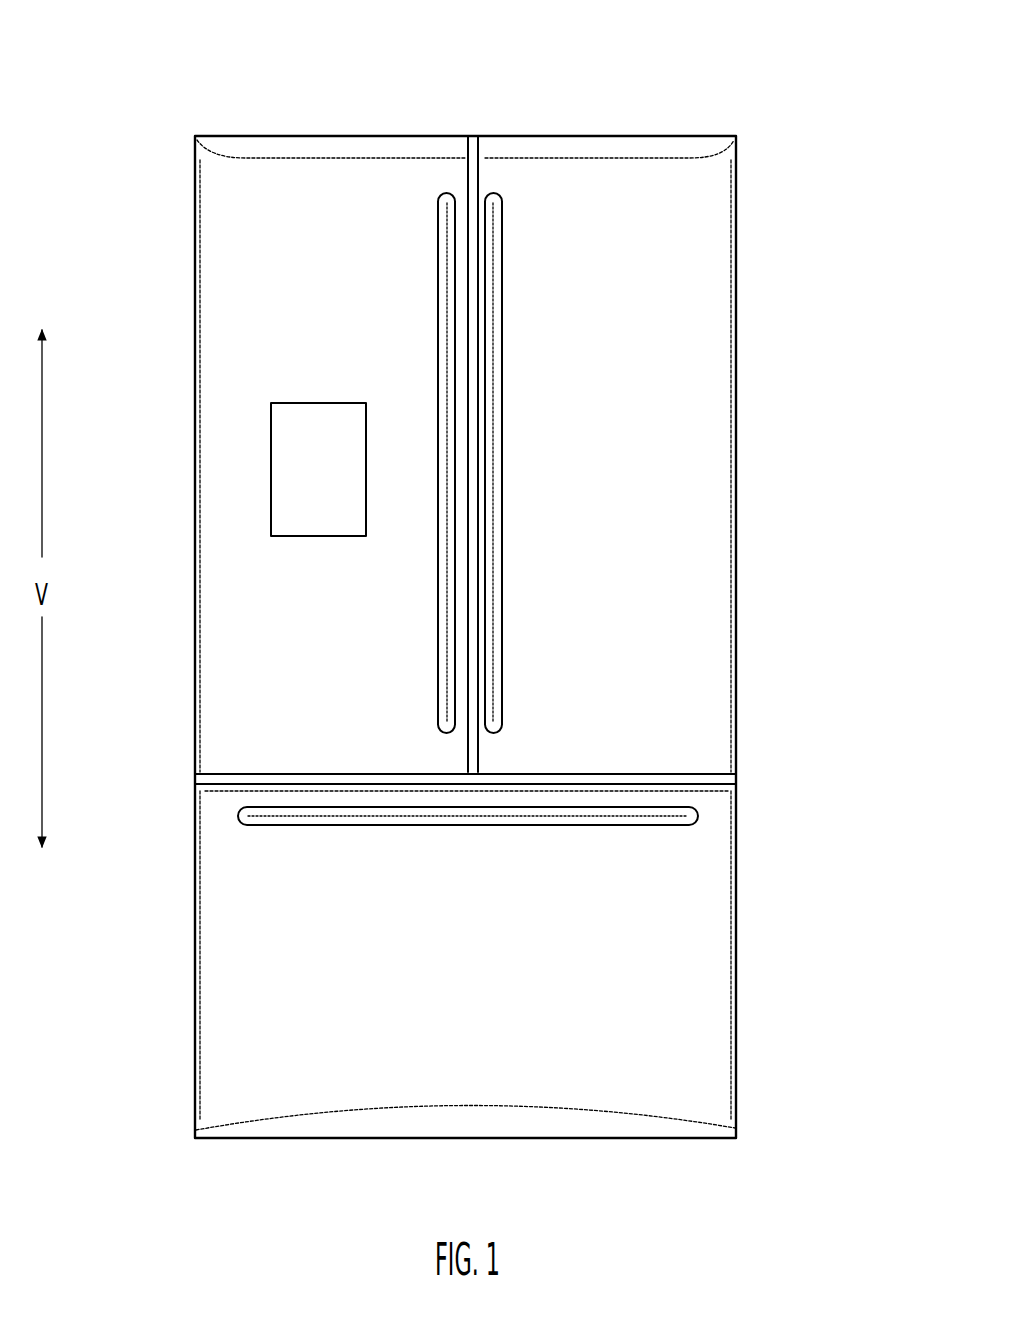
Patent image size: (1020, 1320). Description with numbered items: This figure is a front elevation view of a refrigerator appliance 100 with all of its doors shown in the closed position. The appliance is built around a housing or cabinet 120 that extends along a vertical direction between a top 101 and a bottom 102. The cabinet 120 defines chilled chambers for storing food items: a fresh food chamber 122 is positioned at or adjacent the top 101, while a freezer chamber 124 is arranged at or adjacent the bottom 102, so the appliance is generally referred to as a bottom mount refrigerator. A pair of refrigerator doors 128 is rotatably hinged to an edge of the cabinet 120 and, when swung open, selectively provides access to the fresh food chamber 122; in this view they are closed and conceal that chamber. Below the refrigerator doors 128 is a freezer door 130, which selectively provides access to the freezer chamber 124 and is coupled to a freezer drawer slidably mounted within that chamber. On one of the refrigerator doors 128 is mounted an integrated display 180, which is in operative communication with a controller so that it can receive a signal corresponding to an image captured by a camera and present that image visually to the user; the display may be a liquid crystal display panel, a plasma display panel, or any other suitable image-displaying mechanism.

The refrigerator appliance 100 is at (751, 77).
The top 101 is at (179, 123).
The bottom 102 is at (185, 1130).
The cabinet 120 is at (738, 777).
The fresh food chamber 122 is at (694, 563).
The freezer chamber 124 is at (667, 1003).
The refrigerator doors 128 is at (309, 190).
The freezer door 130 is at (225, 985).
The integrated display 180 is at (271, 461).